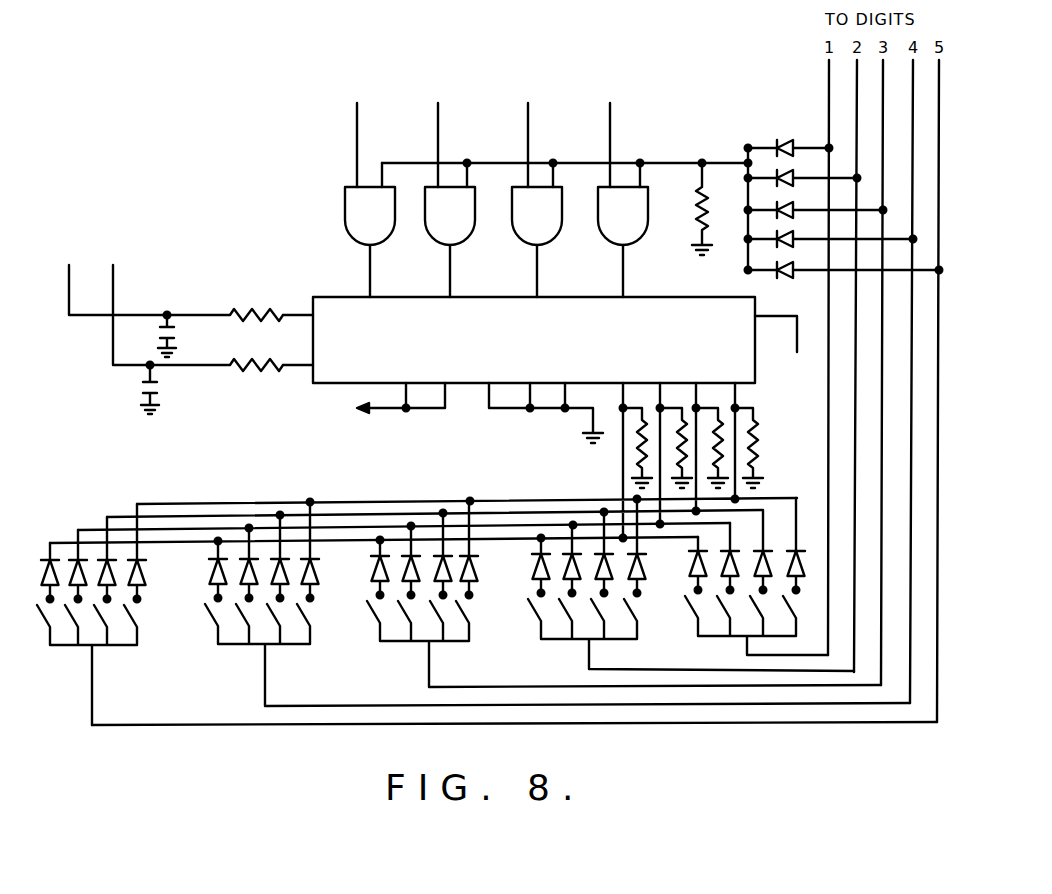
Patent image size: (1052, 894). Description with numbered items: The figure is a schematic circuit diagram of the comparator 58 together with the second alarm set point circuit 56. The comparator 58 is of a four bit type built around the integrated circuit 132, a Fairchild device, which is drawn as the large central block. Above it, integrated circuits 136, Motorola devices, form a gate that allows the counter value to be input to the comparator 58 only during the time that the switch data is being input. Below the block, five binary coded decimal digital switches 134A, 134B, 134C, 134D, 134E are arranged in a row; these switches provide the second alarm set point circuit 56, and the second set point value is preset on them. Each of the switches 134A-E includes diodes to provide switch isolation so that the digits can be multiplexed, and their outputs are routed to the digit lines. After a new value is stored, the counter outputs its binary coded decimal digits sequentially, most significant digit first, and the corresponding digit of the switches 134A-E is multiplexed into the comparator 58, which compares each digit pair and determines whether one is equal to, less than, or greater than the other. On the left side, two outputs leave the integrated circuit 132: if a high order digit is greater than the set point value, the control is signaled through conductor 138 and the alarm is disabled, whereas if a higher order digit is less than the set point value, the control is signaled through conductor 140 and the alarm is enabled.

The second alarm set point circuit 56 is at (345, 738).
The comparator 58 is at (467, 297).
The integrated circuit 132 is at (488, 348).
The binary coded decimal digital switch 134A is at (110, 647).
The binary coded decimal digital switch 134B is at (277, 646).
The binary coded decimal digital switch 134C is at (443, 642).
The binary coded decimal digital switch 134D is at (584, 637).
The binary coded decimal digital switch 134E is at (733, 635).
The integrated circuits 136 is at (605, 263).
The conductor 138 is at (130, 315).
The conductor 140 is at (128, 365).